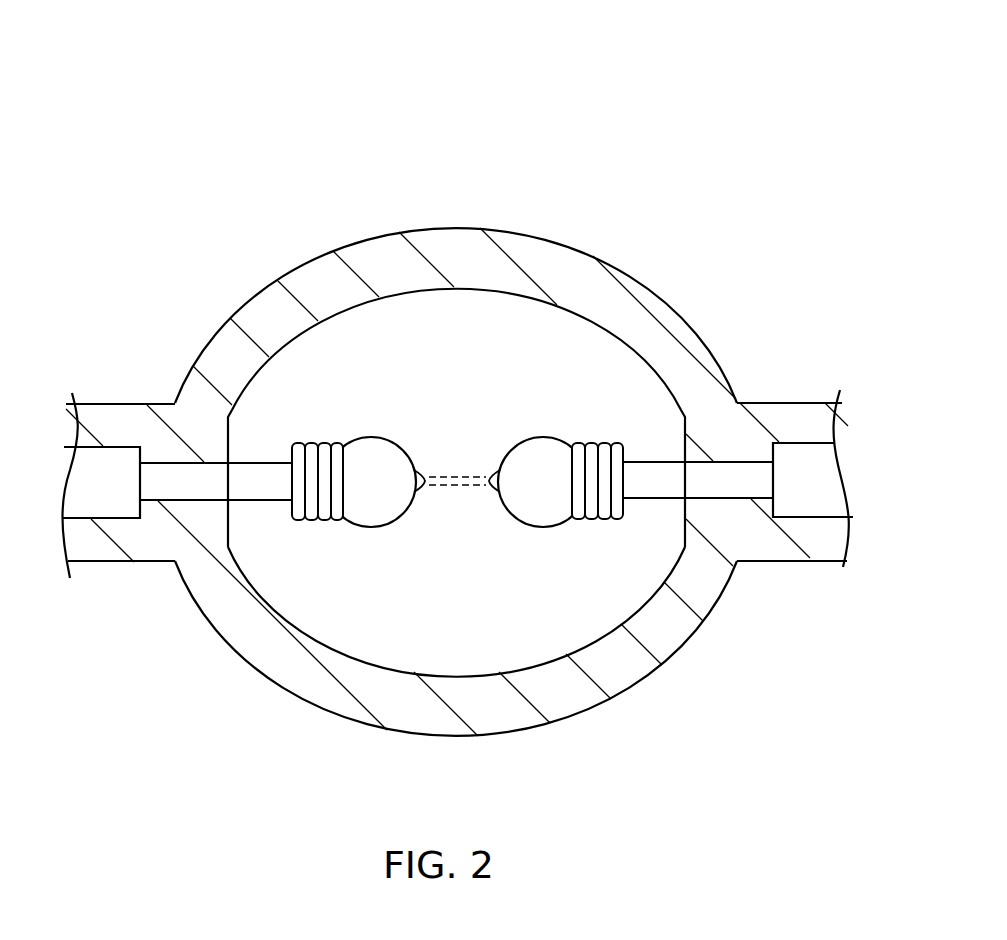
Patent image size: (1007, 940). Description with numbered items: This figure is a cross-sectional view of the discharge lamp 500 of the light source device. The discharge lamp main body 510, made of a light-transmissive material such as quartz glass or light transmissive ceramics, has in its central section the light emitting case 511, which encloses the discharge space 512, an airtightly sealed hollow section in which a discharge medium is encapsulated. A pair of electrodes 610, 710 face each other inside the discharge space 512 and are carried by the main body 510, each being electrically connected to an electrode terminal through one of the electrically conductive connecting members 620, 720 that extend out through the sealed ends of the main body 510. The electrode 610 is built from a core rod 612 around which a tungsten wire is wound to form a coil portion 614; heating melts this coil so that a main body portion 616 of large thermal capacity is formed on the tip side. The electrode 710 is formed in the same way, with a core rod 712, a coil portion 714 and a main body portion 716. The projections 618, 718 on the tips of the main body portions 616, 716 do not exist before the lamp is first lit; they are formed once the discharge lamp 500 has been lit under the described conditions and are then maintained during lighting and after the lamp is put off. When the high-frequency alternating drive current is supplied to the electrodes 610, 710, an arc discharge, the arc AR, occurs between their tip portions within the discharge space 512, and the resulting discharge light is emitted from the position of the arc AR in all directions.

The discharge lamp 500 is at (612, 95).
The discharge lamp main body 510 is at (304, 262).
The light emitting case 511 is at (437, 227).
The discharge space 512 is at (490, 322).
The electrode 610 is at (354, 562).
The core rod 612 is at (185, 502).
The coil portion 614 is at (343, 529).
The main body portion 616 is at (383, 528).
The projection 618 is at (421, 491).
The connecting member 620 is at (118, 445).
The electrode 710 is at (557, 562).
The core rod 712 is at (737, 500).
The coil portion 714 is at (623, 529).
The main body portion 716 is at (518, 525).
The projection 718 is at (490, 470).
The connecting member 720 is at (804, 441).
The arc AR is at (430, 477).